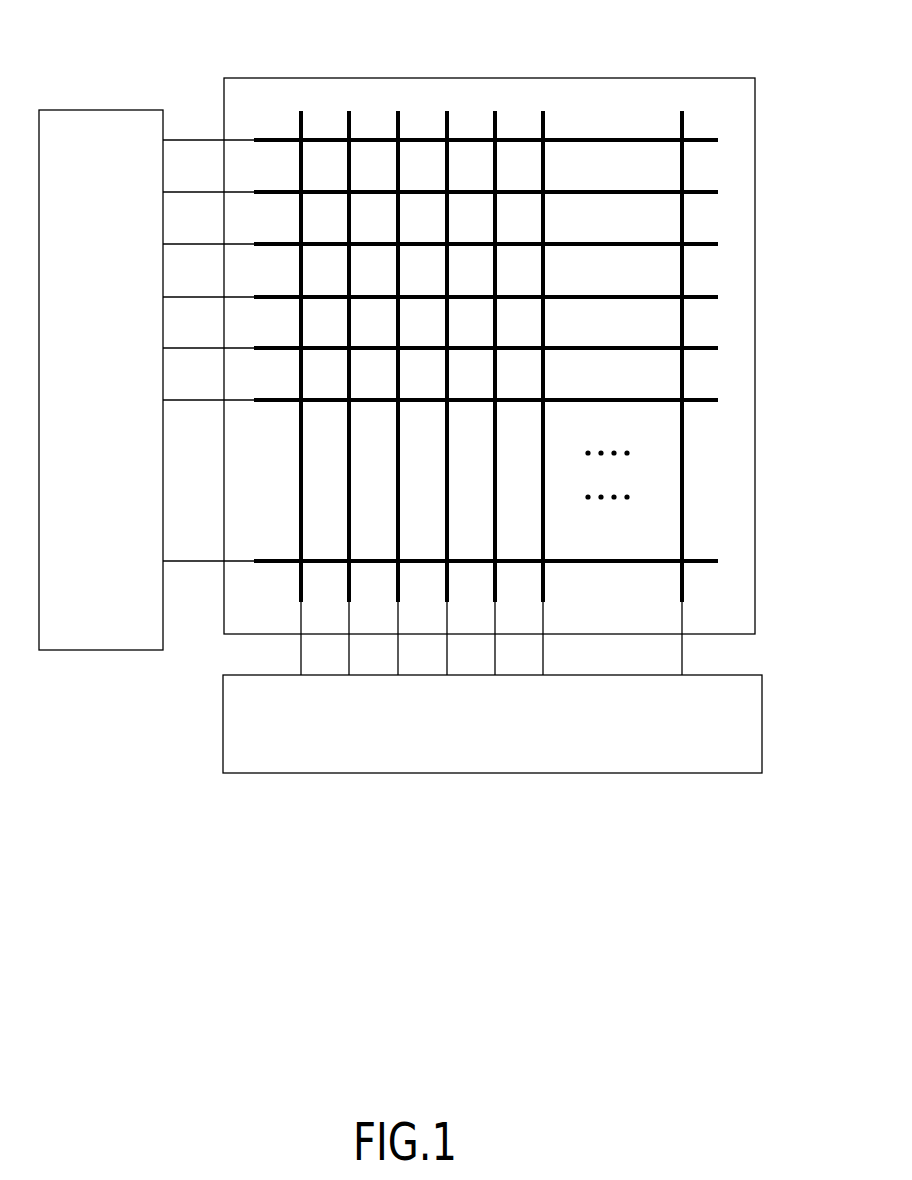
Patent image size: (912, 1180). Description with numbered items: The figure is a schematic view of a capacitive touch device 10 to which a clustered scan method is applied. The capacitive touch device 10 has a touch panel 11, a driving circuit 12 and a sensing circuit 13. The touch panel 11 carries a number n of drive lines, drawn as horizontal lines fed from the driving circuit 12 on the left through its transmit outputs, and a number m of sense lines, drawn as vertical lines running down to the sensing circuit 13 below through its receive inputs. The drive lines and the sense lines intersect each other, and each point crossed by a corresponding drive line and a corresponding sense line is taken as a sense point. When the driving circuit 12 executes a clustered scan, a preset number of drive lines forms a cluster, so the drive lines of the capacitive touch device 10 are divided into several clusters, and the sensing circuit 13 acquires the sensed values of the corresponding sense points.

The capacitive touch device 10 is at (765, 99).
The touch panel 11 is at (755, 359).
The driving circuit 12 is at (75, 110).
The sensing circuit 13 is at (762, 723).